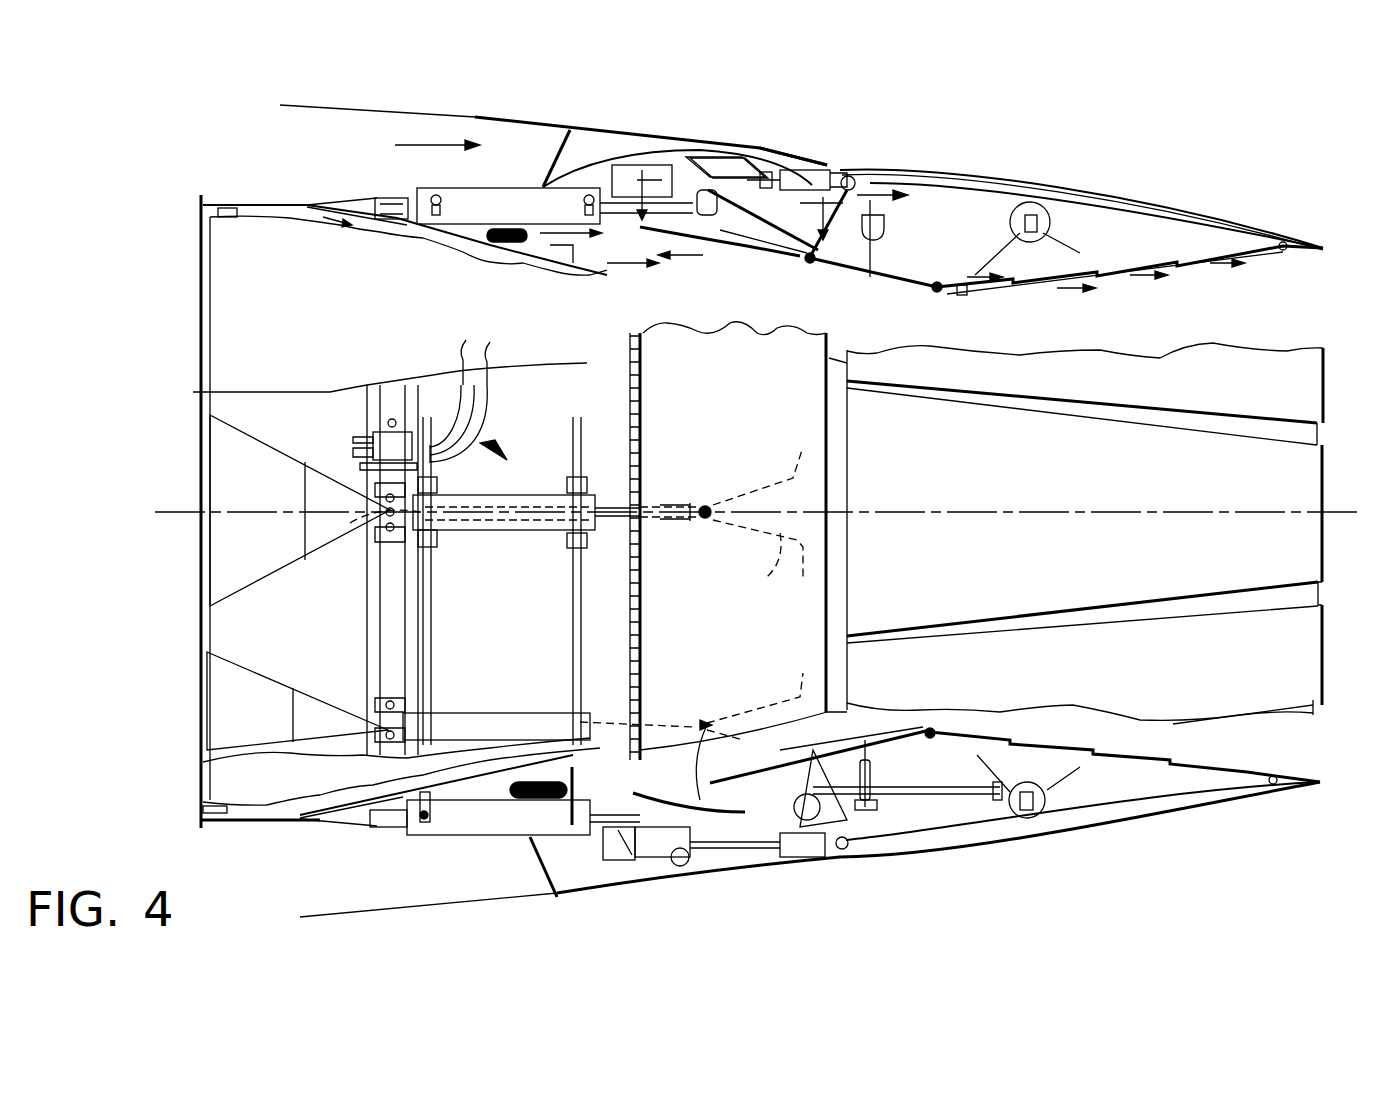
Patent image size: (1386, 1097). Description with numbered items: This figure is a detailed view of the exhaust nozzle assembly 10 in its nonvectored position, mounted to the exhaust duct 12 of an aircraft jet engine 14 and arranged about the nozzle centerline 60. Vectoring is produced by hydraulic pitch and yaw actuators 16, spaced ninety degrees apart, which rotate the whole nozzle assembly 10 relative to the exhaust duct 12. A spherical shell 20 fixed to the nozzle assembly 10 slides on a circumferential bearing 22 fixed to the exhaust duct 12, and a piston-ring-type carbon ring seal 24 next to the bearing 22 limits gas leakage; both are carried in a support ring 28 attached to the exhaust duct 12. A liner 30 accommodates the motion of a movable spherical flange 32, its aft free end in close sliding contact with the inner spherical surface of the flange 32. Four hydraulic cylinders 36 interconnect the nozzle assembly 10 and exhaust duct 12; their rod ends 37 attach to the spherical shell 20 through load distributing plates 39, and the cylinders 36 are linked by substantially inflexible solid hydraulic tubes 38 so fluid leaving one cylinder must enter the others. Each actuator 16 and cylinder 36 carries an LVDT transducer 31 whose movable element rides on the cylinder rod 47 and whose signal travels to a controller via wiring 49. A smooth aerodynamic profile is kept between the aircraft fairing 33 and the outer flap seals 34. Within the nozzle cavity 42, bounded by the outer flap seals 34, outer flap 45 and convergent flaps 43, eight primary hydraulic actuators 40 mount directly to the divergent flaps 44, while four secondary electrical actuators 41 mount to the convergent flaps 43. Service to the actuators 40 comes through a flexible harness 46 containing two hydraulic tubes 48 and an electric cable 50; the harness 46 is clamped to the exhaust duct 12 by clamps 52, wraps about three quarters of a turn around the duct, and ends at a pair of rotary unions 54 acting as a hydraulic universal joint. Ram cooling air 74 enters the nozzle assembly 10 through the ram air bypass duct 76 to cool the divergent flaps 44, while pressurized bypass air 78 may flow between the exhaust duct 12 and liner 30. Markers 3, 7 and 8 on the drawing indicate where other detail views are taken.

The translating cowl 3 is at (800, 156).
The section line indicator 7 is at (727, 202).
The fitting 8 is at (515, 798).
The exhaust nozzle assembly 10 is at (1182, 138).
The exhaust duct 12 is at (650, 272).
The aircraft jet engine 14 is at (116, 520).
The hydraulic pitch and yaw actuators 16 is at (465, 710).
The spherical shell 20 is at (770, 255).
The circumferential bearing 22 is at (737, 805).
The carbon ring seal 24 is at (720, 270).
The support ring 28 is at (720, 740).
The liner 30 is at (470, 258).
The transducer 31 is at (515, 535).
The movable spherical flange 32 is at (765, 258).
The aircraft fairing 33 is at (505, 118).
The outer flap seals 34 is at (748, 165).
The hydraulic cylinders 36 is at (475, 185).
The rod ends 37 is at (668, 542).
The hydraulic tubes 38 is at (455, 212).
The load distributing plates 39 is at (775, 560).
The primary hydraulic actuators 40 is at (1050, 225).
The secondary electrical actuators 41 is at (660, 155).
The nozzle cavity 42 is at (958, 222).
The convergent flaps 43 is at (880, 295).
The divergent flaps 44 is at (1285, 250).
The outer flap 45 is at (985, 165).
The flexible harness 46 is at (505, 458).
The cylinder rod 47 is at (660, 505).
The hydraulic tubes 48 is at (487, 360).
The wiring 49 is at (365, 520).
The electric cable 50 is at (488, 415).
The clamps 52 is at (380, 438).
The rotary unions 54 is at (660, 880).
The centerline 60 is at (1160, 500).
The ram cooling air 74 is at (410, 148).
The ram air bypass duct 76 is at (326, 172).
The pressurized bypass air 78 is at (325, 225).